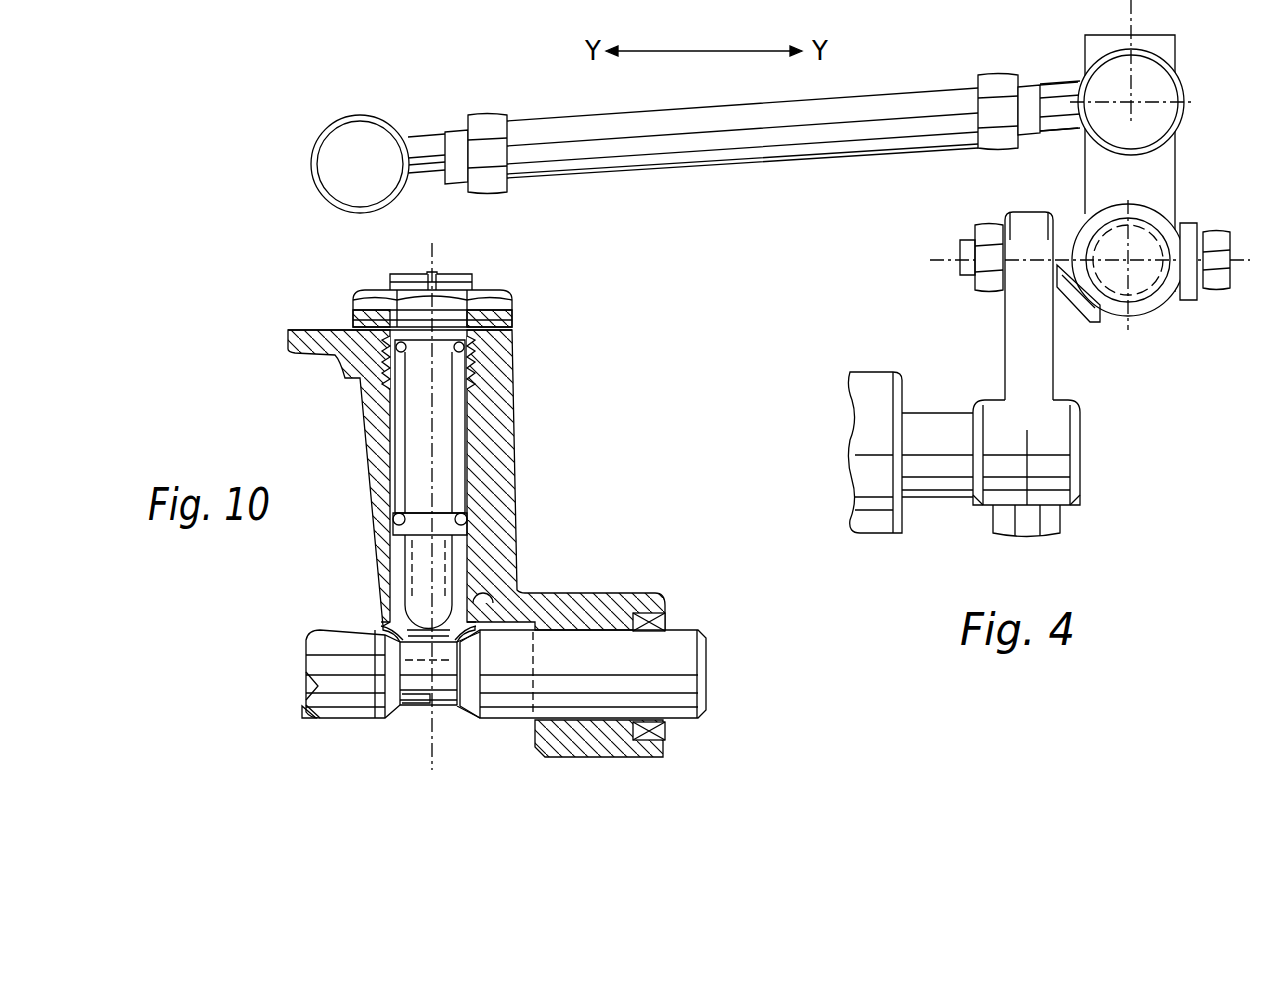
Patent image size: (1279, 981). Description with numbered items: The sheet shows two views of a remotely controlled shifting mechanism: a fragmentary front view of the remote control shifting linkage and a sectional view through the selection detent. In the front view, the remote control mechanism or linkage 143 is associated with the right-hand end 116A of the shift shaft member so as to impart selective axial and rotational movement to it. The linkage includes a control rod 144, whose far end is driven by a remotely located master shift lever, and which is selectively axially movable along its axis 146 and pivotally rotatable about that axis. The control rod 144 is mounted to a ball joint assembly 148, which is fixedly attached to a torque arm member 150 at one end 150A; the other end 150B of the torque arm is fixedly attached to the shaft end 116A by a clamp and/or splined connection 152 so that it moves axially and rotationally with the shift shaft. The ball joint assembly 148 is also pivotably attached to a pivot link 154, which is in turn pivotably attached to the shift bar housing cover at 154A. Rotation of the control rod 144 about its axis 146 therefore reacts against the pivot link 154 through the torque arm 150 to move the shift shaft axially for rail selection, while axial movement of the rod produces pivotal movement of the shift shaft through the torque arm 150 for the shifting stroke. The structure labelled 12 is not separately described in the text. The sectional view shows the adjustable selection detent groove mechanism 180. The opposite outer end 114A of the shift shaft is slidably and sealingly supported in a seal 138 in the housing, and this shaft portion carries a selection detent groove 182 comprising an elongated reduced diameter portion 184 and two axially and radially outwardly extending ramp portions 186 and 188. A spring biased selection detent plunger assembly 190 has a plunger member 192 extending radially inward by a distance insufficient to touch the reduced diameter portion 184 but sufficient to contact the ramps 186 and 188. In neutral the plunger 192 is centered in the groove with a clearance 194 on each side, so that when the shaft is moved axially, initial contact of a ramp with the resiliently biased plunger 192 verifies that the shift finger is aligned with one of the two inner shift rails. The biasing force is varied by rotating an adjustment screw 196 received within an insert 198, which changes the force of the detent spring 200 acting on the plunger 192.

In FIG. 10, the bracket plate 12 is at (641, 592).
In FIG. 4, the bracket plate 12 is at (915, 428).
In FIG. 10, the outer end of shift shaft section 114A is at (698, 652).
In FIG. 4, the outer end of shift shaft section 116A is at (965, 412).
In FIG. 10, the seal 138 is at (668, 620).
In FIG. 4, the remote control mechanism or linkage 143 is at (1061, 70).
In FIG. 4, the control rod 144 is at (1141, 282).
In FIG. 4, the axis of control rod 146 is at (1118, 280).
In FIG. 4, the ball joint assembly 148 is at (1184, 210).
In FIG. 4, the torque arm member 150 is at (1000, 381).
In FIG. 4, the end of torque arm member 150A is at (1020, 214).
In FIG. 4, the end of torque arm member 150B is at (985, 494).
In FIG. 4, the clamp and/or splined connection 152 is at (1047, 525).
In FIG. 4, the pivot link 154 is at (858, 103).
In FIG. 4, the pivot attachment of pivot link 154A is at (346, 138).
In FIG. 10, the adjustable selection detent groove mechanism 180 is at (626, 462).
In FIG. 10, the selection detent groove 182 is at (448, 735).
In FIG. 10, the elongated reduced diameter portion 184 is at (414, 703).
In FIG. 10, the ramp portion 186 is at (470, 716).
In FIG. 10, the ramp portion 188 is at (386, 718).
In FIG. 10, the spring biased selection detent plunger assembly 190 is at (484, 471).
In FIG. 10, the plunger member 192 is at (442, 568).
In FIG. 10, the clearance 194 is at (400, 634).
In FIG. 10, the adjustment screw 196 is at (441, 272).
In FIG. 10, the insert 198 is at (497, 296).
In FIG. 10, the detent spring 200 is at (460, 368).